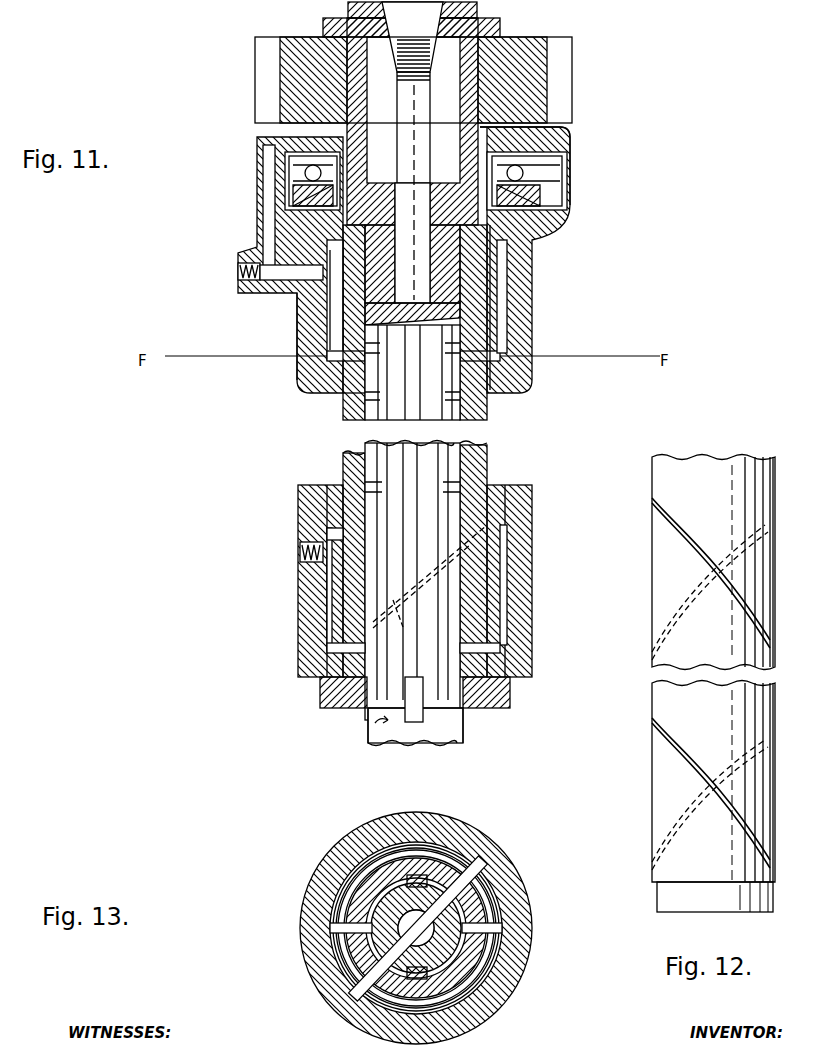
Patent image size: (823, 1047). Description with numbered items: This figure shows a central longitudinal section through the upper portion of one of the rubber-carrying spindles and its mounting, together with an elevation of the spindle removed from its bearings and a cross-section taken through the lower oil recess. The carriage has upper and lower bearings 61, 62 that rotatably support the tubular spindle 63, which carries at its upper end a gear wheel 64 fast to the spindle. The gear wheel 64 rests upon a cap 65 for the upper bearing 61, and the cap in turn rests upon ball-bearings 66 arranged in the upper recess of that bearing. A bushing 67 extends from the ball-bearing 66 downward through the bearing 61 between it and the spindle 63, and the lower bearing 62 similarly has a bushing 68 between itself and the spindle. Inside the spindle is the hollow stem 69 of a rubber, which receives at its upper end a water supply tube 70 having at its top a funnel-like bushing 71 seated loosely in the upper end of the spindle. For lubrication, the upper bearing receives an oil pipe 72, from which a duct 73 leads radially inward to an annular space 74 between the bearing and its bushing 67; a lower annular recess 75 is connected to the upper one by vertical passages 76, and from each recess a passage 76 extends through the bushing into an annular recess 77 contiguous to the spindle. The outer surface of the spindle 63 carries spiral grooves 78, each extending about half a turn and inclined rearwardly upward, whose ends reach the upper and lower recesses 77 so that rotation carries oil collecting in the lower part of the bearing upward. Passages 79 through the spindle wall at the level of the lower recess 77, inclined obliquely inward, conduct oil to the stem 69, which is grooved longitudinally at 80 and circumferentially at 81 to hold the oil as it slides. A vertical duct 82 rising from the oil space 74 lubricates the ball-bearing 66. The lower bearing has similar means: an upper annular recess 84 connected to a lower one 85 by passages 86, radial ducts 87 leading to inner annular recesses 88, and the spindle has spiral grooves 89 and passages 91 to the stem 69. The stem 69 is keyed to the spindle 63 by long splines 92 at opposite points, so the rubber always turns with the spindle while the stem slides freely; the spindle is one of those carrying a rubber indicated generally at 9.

In FIG. 11, the tool spindle 9 is at (343, 400).
In FIG. 11, the upper bearing 61 is at (533, 293).
In FIG. 13, the upper bearing 61 is at (302, 900).
In FIG. 11, the lower bearing 62 is at (515, 585).
In FIG. 11, the spindle 63 is at (490, 410).
In FIG. 12, the spindle 63 is at (712, 467).
In FIG. 13, the spindle 63 is at (365, 955).
In FIG. 11, the gear wheel 64 is at (518, 48).
In FIG. 11, the cap 65 is at (566, 138).
In FIG. 11, the ball-bearings 66 is at (525, 178).
In FIG. 11, the bushing 67 is at (494, 306).
In FIG. 13, the bushing 67 is at (340, 880).
In FIG. 11, the bushing 68 is at (505, 615).
In FIG. 11, the stem 69 is at (455, 730).
In FIG. 13, the stem 69 is at (416, 928).
In FIG. 11, the water supply tube 70 is at (412, 171).
In FIG. 11, the funnel-like bushing 71 is at (392, 26).
In FIG. 11, the oil pipe 72 is at (240, 268).
In FIG. 11, the duct 73 is at (285, 282).
In FIG. 11, the annular space 74 is at (300, 296).
In FIG. 11, the lower annular recess 75 is at (340, 358).
In FIG. 13, the lower annular recess 75 is at (505, 900).
In FIG. 11, the passages 76 is at (330, 300).
In FIG. 13, the passages 76 is at (335, 930).
In FIG. 11, the annular recess 77 is at (510, 252).
In FIG. 13, the annular recess 77 is at (495, 958).
In FIG. 12, the spiral grooves 78 is at (688, 555).
In FIG. 11, the passages 79 is at (490, 356).
In FIG. 13, the passages 79 is at (503, 928).
In FIG. 11, the longitudinal grooves 80 is at (380, 425).
In FIG. 13, the longitudinal grooves 80 is at (475, 882).
In FIG. 11, the circumferential grooves 81 is at (428, 400).
In FIG. 11, the vertical duct 82 is at (268, 190).
In FIG. 11, the upper annular recess 84 is at (320, 575).
In FIG. 11, the lower annular recess 85 is at (302, 548).
In FIG. 11, the passages 86 is at (330, 595).
In FIG. 11, the radial ducts 87 is at (330, 532).
In FIG. 11, the inner annular recesses 88 is at (510, 530).
In FIG. 11, the spiral grooves 89 is at (430, 582).
In FIG. 12, the spiral grooves 89 is at (680, 752).
In FIG. 11, the passages 91 is at (500, 648).
In FIG. 11, the splines 92 is at (410, 725).
In FIG. 13, the splines 92 is at (420, 880).